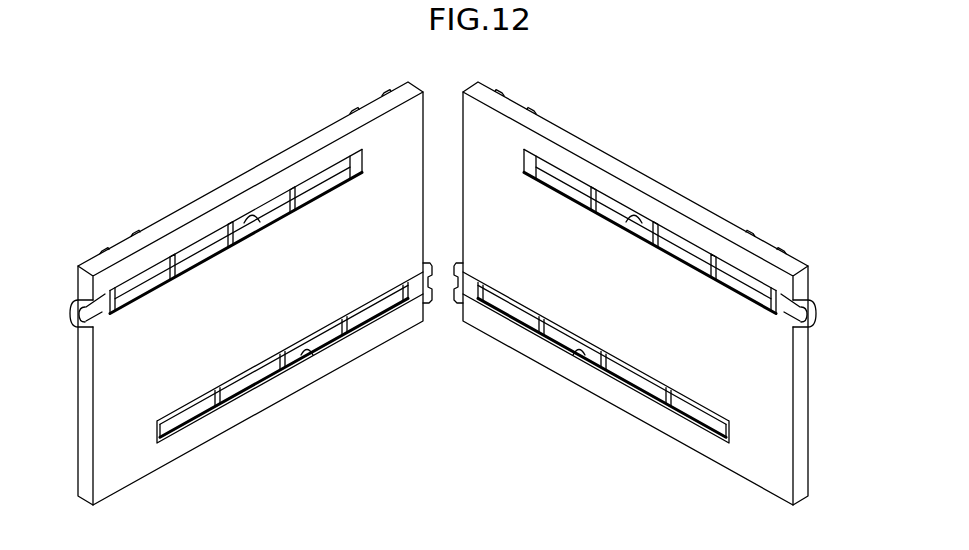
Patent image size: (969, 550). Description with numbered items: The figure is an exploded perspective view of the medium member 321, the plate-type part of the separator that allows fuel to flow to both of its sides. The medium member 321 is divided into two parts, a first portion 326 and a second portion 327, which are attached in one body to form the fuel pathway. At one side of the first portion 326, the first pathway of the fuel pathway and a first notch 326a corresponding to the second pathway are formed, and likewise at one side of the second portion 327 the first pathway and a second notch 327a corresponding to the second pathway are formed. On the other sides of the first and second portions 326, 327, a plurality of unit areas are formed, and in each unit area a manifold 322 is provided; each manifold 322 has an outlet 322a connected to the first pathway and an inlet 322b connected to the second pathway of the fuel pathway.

The medium member 321 is at (469, 464).
The manifold 322 is at (443, 325).
The outlet 322a is at (224, 406).
The inlet 322b is at (175, 260).
The first portion 326 is at (258, 412).
The first notch 326a is at (253, 214).
The second portion 327 is at (628, 412).
The second notch 327a is at (634, 214).